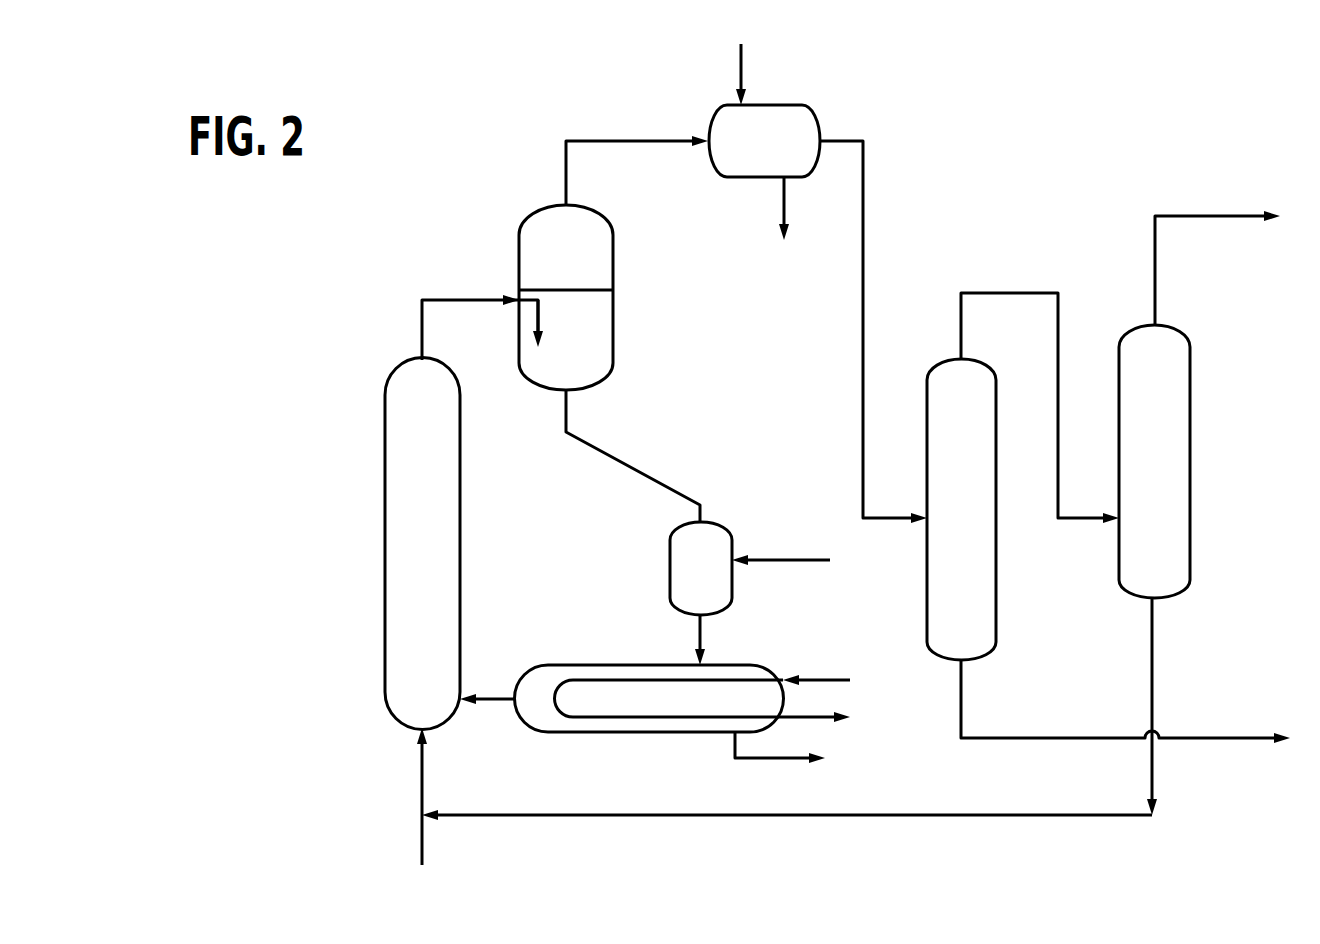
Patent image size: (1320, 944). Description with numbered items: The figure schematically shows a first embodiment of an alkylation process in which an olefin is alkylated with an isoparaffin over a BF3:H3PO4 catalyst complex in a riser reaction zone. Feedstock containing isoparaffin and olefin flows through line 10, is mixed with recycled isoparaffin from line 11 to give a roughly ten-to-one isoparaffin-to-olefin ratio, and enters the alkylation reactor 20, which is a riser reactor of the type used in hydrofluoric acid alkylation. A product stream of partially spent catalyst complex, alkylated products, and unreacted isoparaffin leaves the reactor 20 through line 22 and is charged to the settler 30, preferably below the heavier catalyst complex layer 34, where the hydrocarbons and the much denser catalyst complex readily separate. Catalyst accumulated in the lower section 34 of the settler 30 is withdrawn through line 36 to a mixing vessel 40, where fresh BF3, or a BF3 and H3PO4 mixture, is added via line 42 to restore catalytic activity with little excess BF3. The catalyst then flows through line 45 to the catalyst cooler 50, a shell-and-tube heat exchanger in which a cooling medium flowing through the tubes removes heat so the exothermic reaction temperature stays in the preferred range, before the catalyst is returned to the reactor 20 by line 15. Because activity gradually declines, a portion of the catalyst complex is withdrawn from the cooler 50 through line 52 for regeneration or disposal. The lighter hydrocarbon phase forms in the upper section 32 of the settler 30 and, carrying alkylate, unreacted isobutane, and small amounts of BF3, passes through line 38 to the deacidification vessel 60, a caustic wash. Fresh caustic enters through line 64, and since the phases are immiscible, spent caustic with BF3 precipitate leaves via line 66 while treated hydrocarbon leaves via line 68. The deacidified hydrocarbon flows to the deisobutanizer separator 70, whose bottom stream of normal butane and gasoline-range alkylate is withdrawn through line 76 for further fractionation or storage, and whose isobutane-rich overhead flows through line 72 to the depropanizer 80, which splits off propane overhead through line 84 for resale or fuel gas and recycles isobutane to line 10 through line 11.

The feedstock line 10 is at (420, 842).
The recycle line 11 is at (485, 815).
The return line 15 is at (495, 698).
The alkylation reactor 20 is at (433, 535).
The product stream line 22 is at (420, 347).
The settler 30 is at (519, 262).
The upper section 32 is at (580, 265).
The catalyst complex layer 34 is at (580, 343).
The catalyst withdrawal line 36 is at (655, 482).
The hydrocarbon phase line 38 is at (628, 140).
The mixing vessel 40 is at (713, 577).
The BF3 addition line 42 is at (798, 560).
The catalyst line 45 is at (700, 632).
The catalyst cooler 50 is at (615, 733).
The catalyst withdrawal line 52 is at (735, 752).
The deacidification vessel 60 is at (781, 152).
The fresh caustic line 64 is at (742, 65).
The spent caustic line 66 is at (778, 190).
The treated hydrocarbon line 68 is at (863, 285).
The deisobutanizer separator 70 is at (972, 500).
The overhead stream line 72 is at (958, 327).
The bottom stream line 76 is at (960, 717).
The depropanizer 80 is at (1168, 455).
The propane overhead line 84 is at (1153, 280).